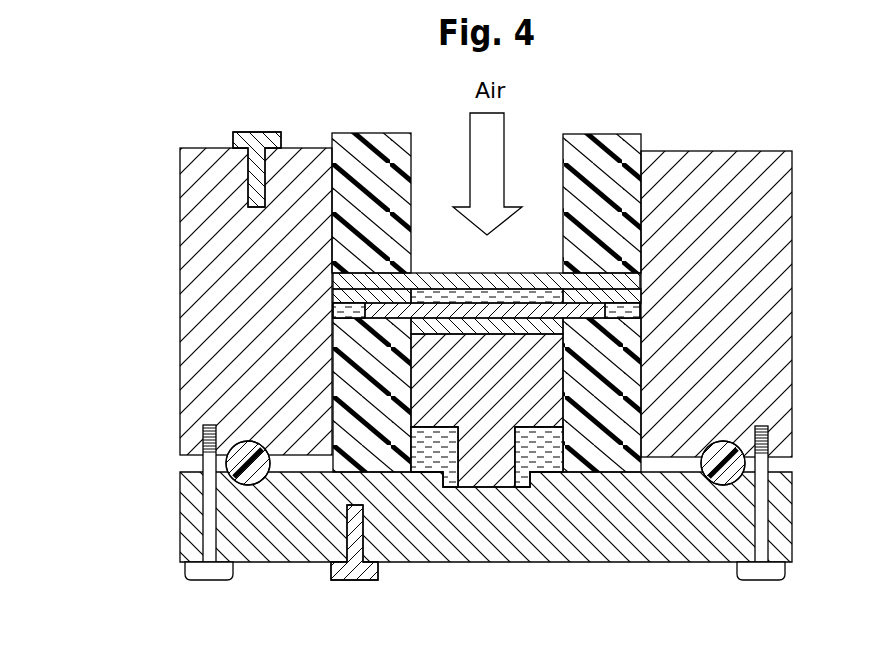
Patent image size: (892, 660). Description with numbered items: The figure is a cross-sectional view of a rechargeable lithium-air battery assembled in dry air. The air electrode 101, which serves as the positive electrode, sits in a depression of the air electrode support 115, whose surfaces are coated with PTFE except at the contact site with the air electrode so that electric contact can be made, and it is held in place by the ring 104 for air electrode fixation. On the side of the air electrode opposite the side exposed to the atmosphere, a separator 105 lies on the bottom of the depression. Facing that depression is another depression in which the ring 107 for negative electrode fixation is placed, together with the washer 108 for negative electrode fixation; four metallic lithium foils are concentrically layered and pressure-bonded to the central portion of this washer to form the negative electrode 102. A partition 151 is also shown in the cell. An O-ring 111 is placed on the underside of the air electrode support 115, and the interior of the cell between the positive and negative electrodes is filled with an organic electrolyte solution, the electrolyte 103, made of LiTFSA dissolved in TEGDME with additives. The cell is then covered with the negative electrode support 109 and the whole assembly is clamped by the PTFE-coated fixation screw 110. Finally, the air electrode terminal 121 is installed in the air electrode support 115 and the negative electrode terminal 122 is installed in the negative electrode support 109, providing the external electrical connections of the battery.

The air electrode 101 is at (437, 281).
The negative electrode 102 is at (645, 324).
The electrolyte 103 is at (540, 296).
The ring for air electrode fixation 104 is at (378, 133).
The separator 105 is at (411, 326).
The ring for negative electrode fixation 107 is at (360, 400).
The washer for negative electrode fixation 108 is at (485, 480).
The negative electrode support 109 is at (793, 520).
The fixation screw 110 is at (205, 581).
The O-ring 111 is at (250, 486).
The air electrode support 115 is at (180, 210).
The air electrode terminal 121 is at (262, 132).
The negative electrode terminal 122 is at (357, 581).
The partition 151 is at (333, 294).